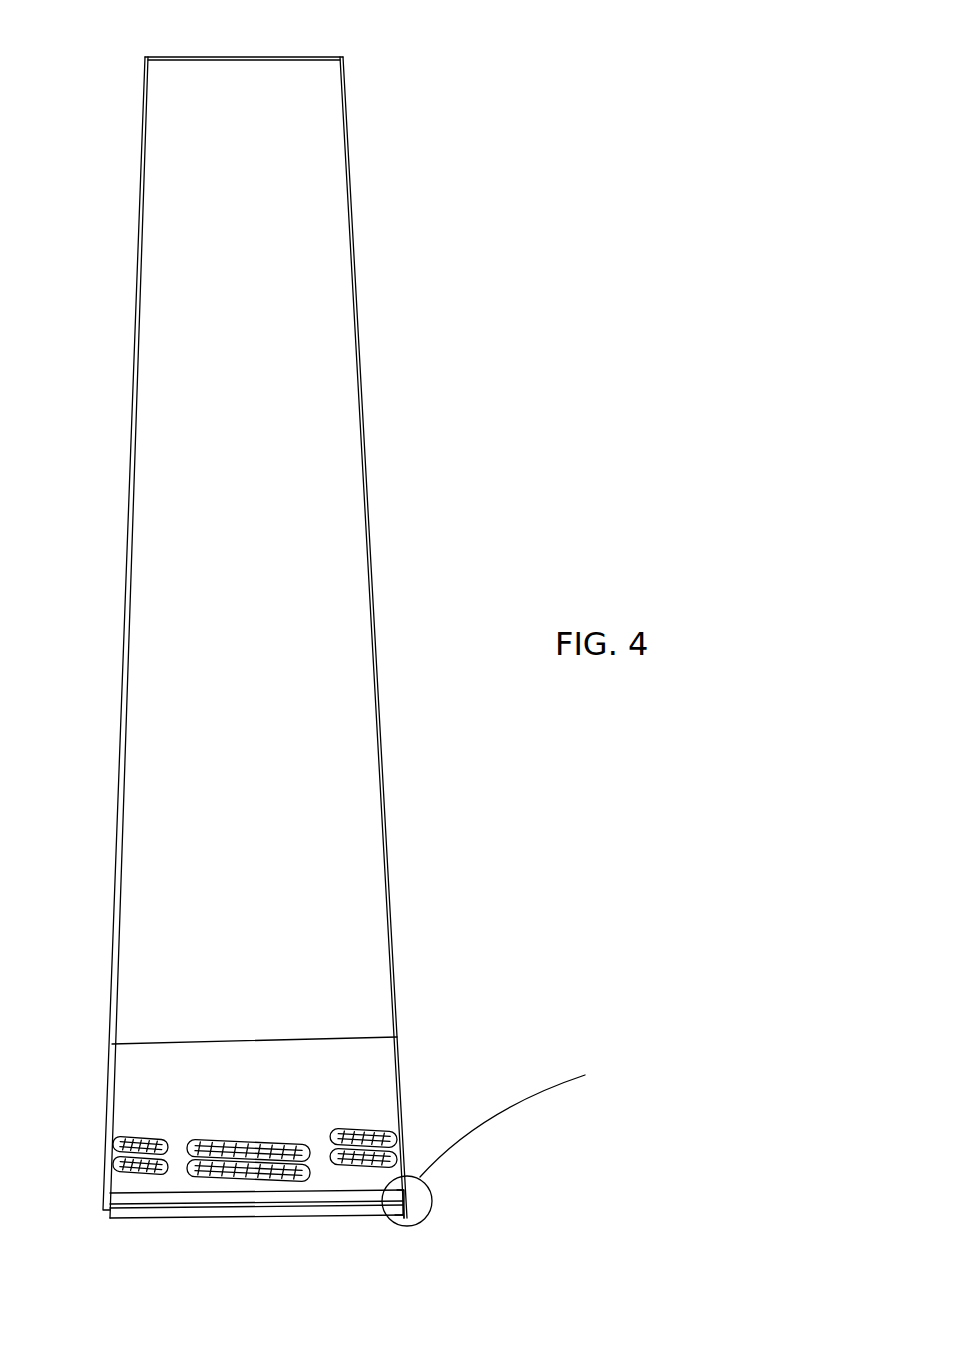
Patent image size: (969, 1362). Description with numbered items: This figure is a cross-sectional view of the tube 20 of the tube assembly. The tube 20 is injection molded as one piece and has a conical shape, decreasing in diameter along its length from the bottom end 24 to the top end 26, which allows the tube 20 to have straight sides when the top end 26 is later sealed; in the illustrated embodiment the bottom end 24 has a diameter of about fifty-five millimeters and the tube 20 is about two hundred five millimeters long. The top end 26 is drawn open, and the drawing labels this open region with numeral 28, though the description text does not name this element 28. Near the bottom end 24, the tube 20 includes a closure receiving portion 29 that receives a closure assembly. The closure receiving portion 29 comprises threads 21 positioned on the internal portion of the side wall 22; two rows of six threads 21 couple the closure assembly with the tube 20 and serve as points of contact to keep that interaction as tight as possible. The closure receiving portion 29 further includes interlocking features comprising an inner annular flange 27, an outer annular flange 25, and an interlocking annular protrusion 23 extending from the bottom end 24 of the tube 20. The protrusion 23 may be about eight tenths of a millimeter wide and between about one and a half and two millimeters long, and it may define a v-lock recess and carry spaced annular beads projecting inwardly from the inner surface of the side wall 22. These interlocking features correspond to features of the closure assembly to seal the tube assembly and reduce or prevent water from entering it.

The tube 20 is at (350, 646).
The threads 21 is at (220, 1168).
The side wall 22 is at (372, 505).
The interlocking annular protrusion 23 is at (400, 1213).
The bottom end 24 is at (226, 1241).
The outer annular flange 25 is at (425, 1217).
The top end 26 is at (145, 58).
The inner annular flange 27 is at (385, 1190).
The top opening 28 is at (263, 97).
The closure receiving portion 29 is at (110, 1135).